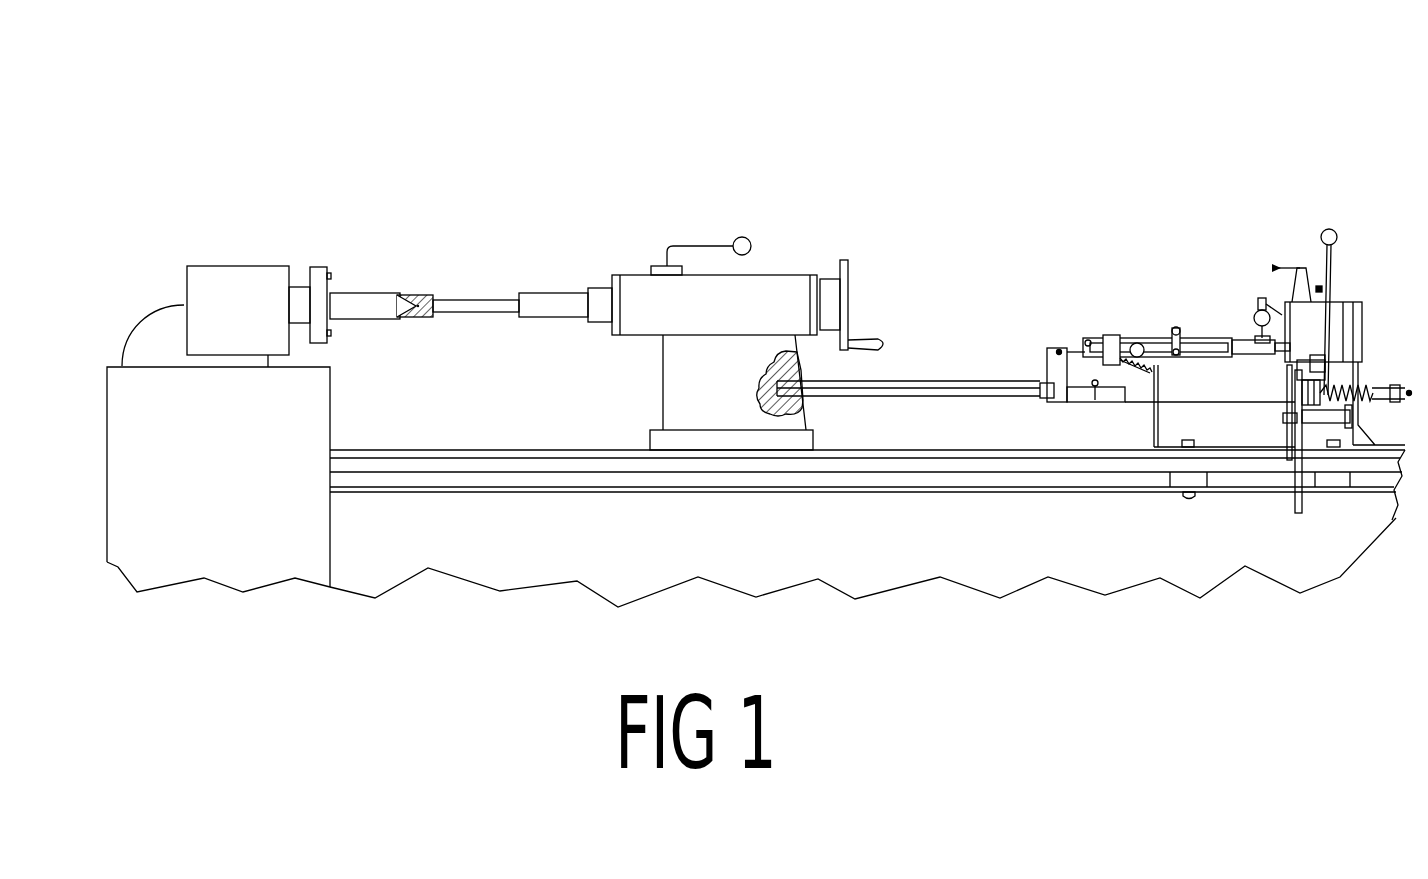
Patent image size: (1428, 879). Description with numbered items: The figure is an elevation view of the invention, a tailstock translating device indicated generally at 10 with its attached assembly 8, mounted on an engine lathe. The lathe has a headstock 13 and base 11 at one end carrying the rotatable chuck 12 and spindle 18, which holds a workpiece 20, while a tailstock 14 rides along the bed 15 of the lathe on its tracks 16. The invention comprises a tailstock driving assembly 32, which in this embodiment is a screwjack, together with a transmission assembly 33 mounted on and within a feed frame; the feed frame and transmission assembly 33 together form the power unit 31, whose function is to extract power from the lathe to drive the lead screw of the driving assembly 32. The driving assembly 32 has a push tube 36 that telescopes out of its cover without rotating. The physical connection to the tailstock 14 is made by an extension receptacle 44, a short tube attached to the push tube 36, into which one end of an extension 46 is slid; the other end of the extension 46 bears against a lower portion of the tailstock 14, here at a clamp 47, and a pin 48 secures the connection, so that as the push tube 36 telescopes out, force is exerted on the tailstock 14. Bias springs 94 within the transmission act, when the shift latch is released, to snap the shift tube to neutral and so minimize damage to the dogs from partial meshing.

The carriage assembly 8 is at (1218, 113).
The lathe 10 is at (571, 86).
The lathe bed base 11 is at (388, 478).
The rotatable chuck 12 is at (318, 272).
The headstock 13 is at (217, 290).
The tailstock 14 is at (767, 284).
The bed 15 is at (440, 408).
The tracks 16 is at (498, 450).
The spindle shaft 18 is at (358, 285).
The workpiece 20 is at (461, 305).
The power unit 31 is at (1360, 200).
The tailstock driving assembly 32 is at (1160, 282).
The transmission assembly 33 is at (1393, 312).
The push tube 36 is at (1112, 396).
The extension receptacle 44 is at (1050, 383).
The extension 46 is at (940, 396).
The clamp 47 is at (790, 386).
The pin 48 is at (1094, 402).
The bias springs 94 is at (1360, 384).